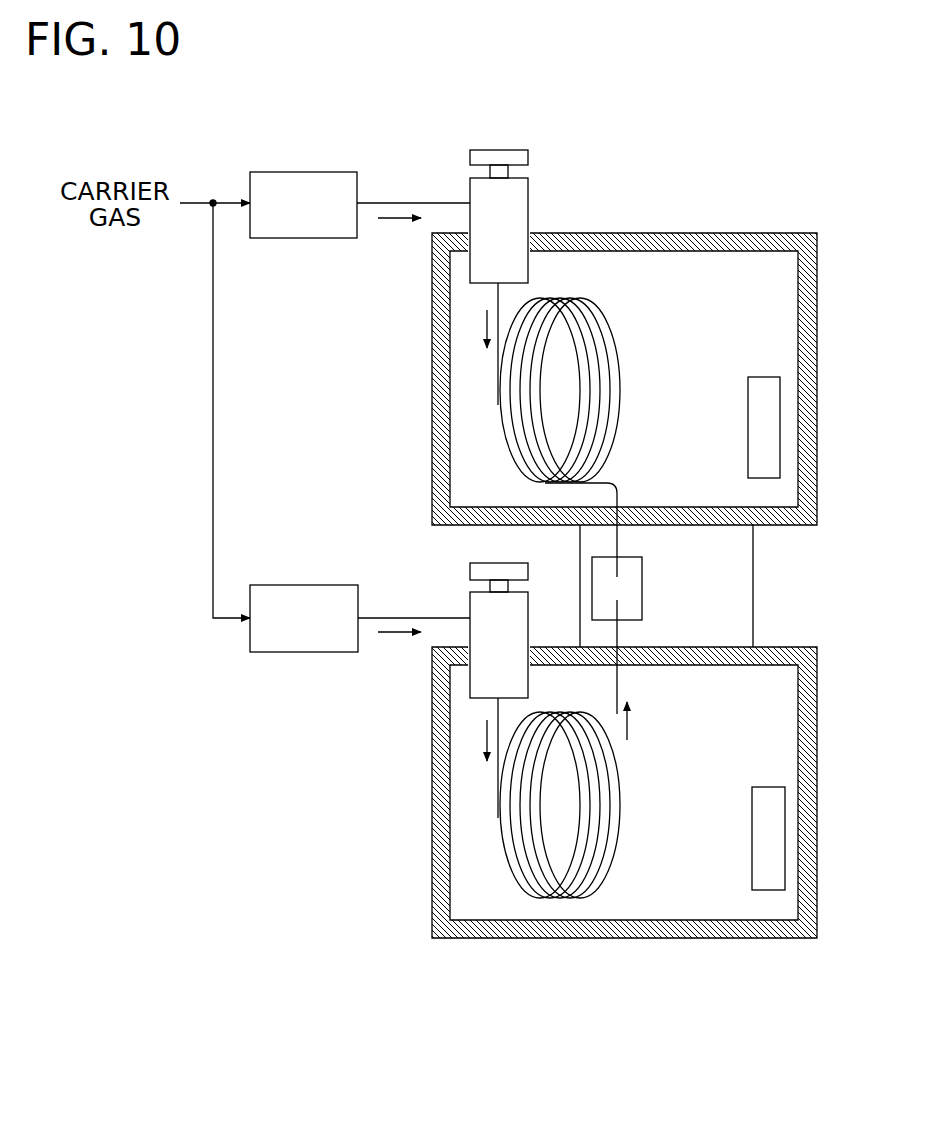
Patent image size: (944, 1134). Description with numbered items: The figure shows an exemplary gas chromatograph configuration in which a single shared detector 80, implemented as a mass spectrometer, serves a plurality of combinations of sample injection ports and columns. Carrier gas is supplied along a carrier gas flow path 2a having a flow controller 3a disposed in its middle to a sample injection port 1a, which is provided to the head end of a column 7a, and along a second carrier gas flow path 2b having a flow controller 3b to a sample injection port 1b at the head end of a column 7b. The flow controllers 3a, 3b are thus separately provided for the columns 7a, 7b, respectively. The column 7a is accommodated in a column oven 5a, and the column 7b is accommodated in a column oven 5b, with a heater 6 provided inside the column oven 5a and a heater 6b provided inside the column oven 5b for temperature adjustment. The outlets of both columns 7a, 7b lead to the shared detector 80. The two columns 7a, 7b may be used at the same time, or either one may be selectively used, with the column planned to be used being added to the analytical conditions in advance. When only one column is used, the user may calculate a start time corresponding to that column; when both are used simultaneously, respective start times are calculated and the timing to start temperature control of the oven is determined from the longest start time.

The sample injection port 1a is at (528, 197).
The sample injection port 1b is at (528, 612).
The carrier gas flow path 2a is at (412, 202).
The carrier gas flow path 2b is at (413, 618).
The flow controller 3a is at (285, 172).
The flow controller 3b is at (283, 585).
The column oven 5a is at (817, 292).
The column oven 5b is at (817, 713).
The heater 6 is at (780, 390).
The heater 6b is at (788, 800).
The column 7a is at (497, 402).
The column 7b is at (497, 813).
The shared detector 80 is at (753, 575).